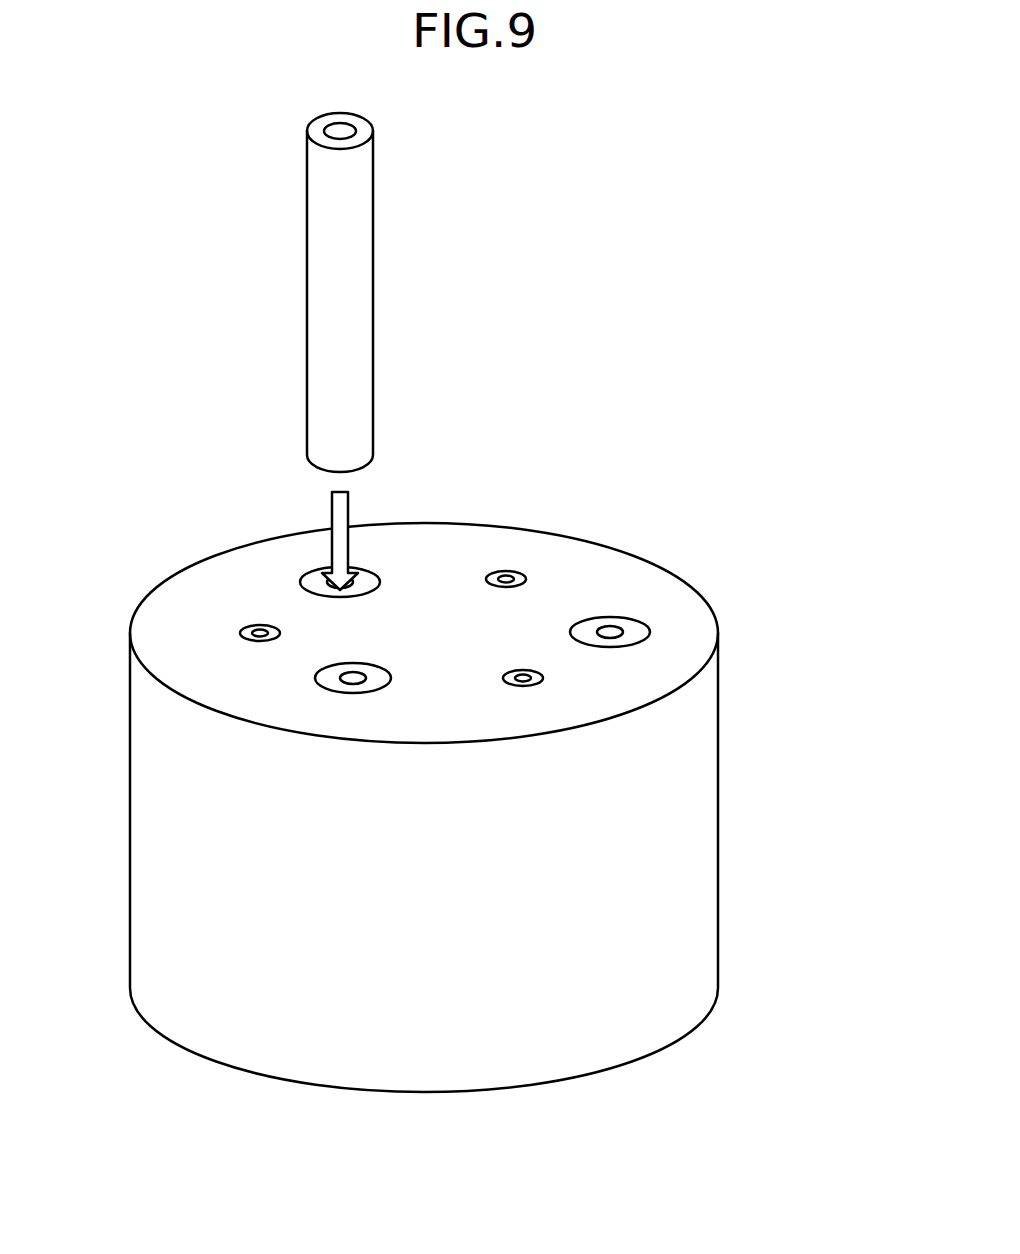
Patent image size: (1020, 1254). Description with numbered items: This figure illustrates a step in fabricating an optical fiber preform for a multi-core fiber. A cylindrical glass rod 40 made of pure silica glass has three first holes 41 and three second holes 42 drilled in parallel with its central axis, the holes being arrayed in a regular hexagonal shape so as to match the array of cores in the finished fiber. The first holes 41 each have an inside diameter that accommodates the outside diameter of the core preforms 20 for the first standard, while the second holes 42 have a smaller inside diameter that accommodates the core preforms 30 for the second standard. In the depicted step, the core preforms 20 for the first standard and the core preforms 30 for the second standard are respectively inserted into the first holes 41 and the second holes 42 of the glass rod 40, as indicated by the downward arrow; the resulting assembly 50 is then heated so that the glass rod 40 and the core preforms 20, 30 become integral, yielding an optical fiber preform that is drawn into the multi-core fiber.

The core preform for the first standard 20 is at (376, 234).
The core preform for the second standard 30 is at (493, 572).
The glass rod 40 is at (762, 643).
The first hole 41 is at (370, 578).
The second hole 42 is at (520, 568).
The assembly 50 is at (463, 756).